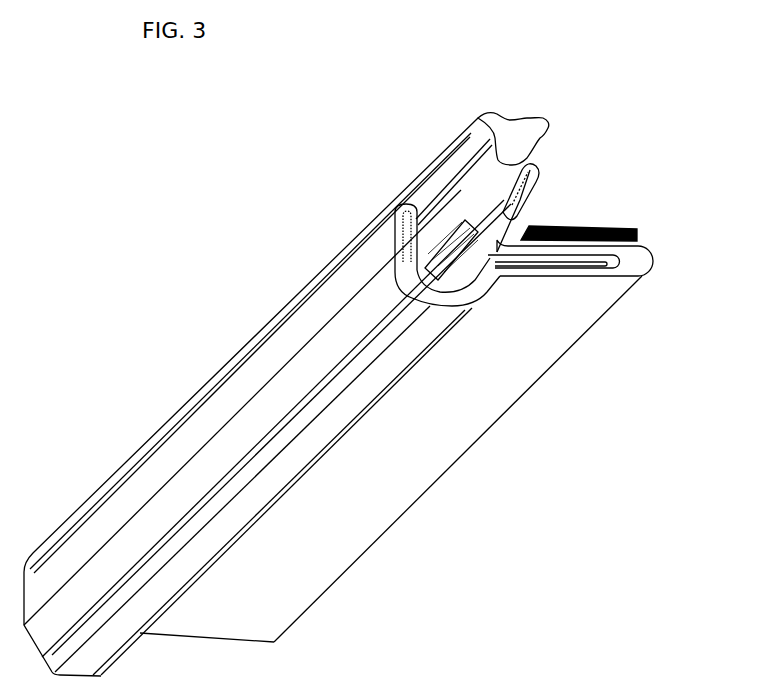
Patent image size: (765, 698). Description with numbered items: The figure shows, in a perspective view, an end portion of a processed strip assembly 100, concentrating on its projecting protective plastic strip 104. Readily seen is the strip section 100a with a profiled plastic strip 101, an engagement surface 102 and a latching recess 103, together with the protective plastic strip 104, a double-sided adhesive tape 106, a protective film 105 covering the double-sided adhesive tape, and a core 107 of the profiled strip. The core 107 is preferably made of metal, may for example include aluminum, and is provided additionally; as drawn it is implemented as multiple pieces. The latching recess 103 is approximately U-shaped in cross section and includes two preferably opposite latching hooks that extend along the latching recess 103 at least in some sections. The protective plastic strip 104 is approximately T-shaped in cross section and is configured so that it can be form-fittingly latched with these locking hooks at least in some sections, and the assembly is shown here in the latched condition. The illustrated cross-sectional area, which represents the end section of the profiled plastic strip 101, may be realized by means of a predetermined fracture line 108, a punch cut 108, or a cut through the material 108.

The strip assembly 100 is at (267, 395).
The profiled plastic strip 101 is at (458, 459).
The strip section 100a is at (320, 492).
The engagement surface 102 is at (646, 258).
The latching recess 103 is at (434, 265).
The protective plastic strip 104 is at (507, 128).
The protective film 105 is at (598, 226).
The double-sided adhesive tape 106 is at (632, 246).
The core 107 is at (516, 191).
The predetermined fracture line, punch cut or cut through the material 108 is at (585, 265).